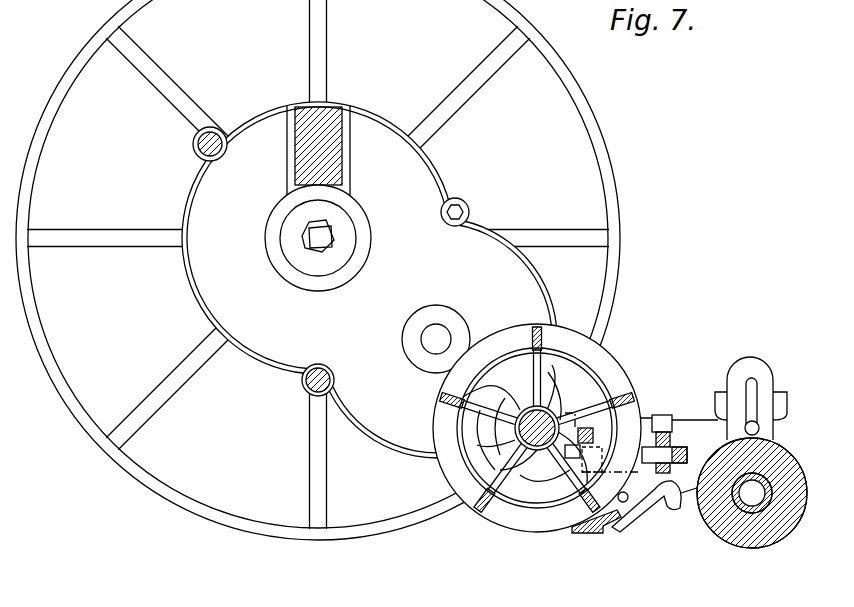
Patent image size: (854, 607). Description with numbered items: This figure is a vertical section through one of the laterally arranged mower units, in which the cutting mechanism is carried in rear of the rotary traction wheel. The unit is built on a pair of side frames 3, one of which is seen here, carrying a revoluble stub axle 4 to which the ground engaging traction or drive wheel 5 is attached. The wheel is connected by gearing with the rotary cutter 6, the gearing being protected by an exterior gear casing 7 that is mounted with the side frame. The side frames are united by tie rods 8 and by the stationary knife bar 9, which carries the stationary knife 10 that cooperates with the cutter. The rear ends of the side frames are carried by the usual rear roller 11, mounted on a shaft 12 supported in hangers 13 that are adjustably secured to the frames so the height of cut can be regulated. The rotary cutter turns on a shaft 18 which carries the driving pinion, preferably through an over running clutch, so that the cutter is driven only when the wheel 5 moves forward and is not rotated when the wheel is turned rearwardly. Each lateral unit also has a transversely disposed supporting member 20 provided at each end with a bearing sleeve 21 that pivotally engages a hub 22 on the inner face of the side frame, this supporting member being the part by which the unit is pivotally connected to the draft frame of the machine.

The side frame 3 is at (331, 257).
The stub axle 4 is at (312, 246).
The traction wheel 5 is at (337, 533).
The rotary cutter 6 is at (621, 389).
The gear casing 7 is at (393, 435).
The tie rod 8 is at (333, 383).
The stationary knife bar 9 is at (627, 503).
The stationary knife 10 is at (607, 527).
The rear roller 11 is at (755, 543).
The roller shaft 12 is at (737, 517).
The hanger 13 is at (752, 367).
The rotary cutter shaft 18 is at (535, 445).
The supporting member 20 is at (333, 103).
The bearing sleeve 21 is at (366, 223).
The hub 22 is at (348, 246).